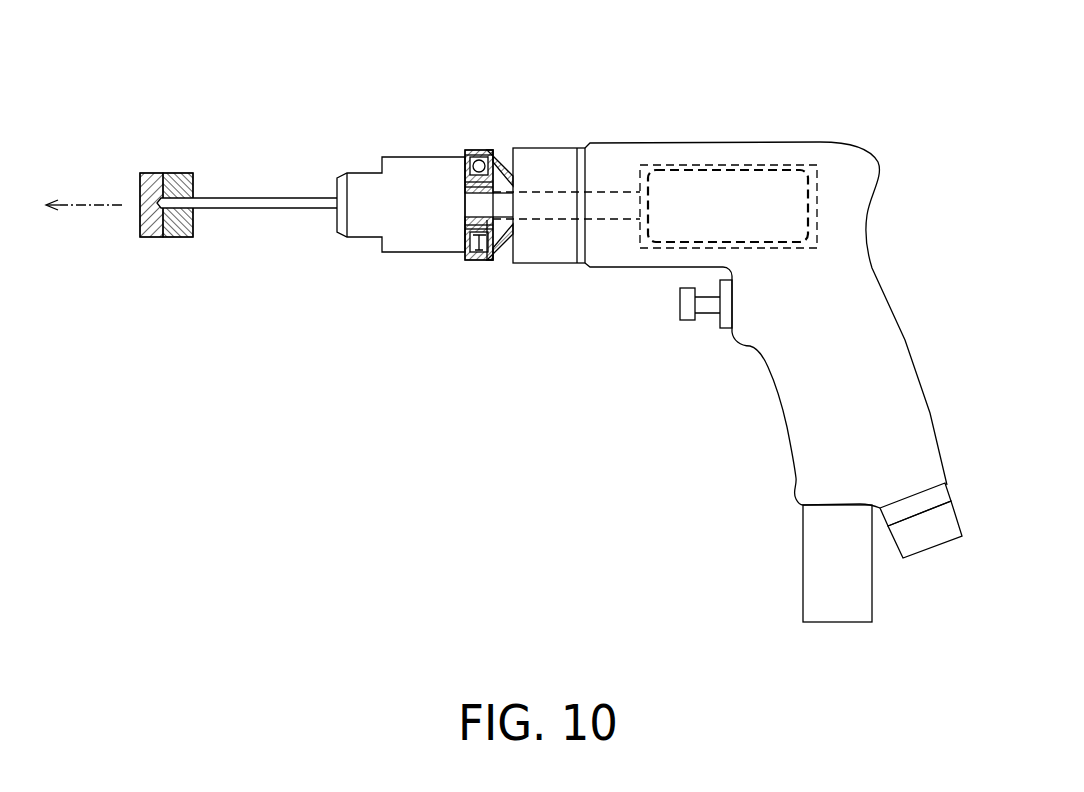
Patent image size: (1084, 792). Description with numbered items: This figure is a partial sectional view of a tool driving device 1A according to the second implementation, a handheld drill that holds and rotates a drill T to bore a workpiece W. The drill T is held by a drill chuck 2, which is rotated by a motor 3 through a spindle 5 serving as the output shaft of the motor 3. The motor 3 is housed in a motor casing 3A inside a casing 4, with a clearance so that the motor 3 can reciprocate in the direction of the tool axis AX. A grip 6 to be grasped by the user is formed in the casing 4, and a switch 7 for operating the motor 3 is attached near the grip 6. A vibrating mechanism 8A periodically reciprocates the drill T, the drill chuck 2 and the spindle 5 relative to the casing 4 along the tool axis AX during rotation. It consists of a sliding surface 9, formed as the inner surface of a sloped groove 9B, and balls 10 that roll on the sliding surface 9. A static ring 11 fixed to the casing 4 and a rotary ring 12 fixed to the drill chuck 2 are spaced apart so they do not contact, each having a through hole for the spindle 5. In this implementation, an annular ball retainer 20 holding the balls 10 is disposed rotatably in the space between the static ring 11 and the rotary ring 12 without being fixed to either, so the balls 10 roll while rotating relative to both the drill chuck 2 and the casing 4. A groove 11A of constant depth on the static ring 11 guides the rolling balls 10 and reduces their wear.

The tool driving device 1A is at (352, 104).
The drill chuck 2 is at (357, 238).
The motor 3 is at (758, 185).
The motor casing 3A is at (688, 165).
The casing 4 is at (612, 268).
The spindle 5 is at (540, 190).
The grip 6 is at (778, 412).
The switch 7 is at (682, 300).
The vibrating mechanism 8A is at (511, 138).
The sliding surface 9 is at (482, 152).
The groove 9B is at (480, 253).
The balls 10 is at (488, 150).
The static ring 11 is at (500, 262).
The groove 11A is at (483, 252).
The rotary ring 12 is at (470, 256).
The ball retainer 20 is at (470, 237).
The drill T is at (273, 208).
The workpiece W is at (148, 238).
The tool axis AX is at (100, 203).